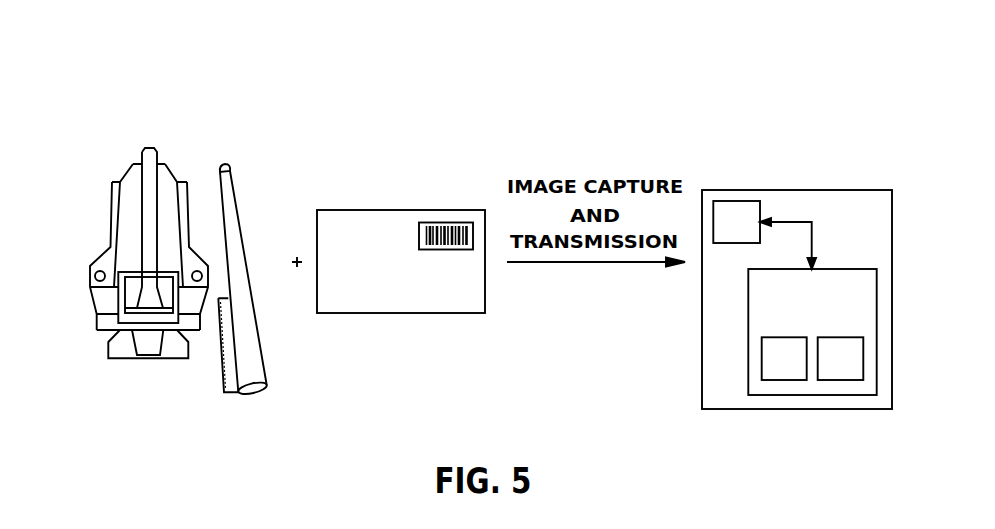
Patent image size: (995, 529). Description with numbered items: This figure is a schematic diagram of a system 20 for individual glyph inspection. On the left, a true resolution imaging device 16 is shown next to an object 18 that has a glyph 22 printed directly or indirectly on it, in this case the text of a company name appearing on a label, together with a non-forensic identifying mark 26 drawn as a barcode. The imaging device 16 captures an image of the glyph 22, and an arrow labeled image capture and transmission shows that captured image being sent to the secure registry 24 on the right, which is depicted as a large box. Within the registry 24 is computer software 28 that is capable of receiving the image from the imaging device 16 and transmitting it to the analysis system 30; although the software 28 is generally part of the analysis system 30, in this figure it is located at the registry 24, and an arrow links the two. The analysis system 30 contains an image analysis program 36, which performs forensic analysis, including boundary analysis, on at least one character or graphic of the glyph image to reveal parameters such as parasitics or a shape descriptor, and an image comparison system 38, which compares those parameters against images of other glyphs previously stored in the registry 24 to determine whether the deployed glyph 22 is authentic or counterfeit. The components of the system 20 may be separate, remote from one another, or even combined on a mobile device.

The true resolution imaging device 16 is at (197, 153).
The object 18 is at (426, 267).
The system 20 is at (730, 116).
The glyph 22 is at (385, 307).
The secure registry 24 is at (786, 190).
The non-forensic identifying mark 26 is at (445, 222).
The computer software 28 is at (727, 233).
The analysis system 30 is at (802, 309).
The image analysis program 36 is at (776, 371).
The image comparison system 38 is at (831, 371).